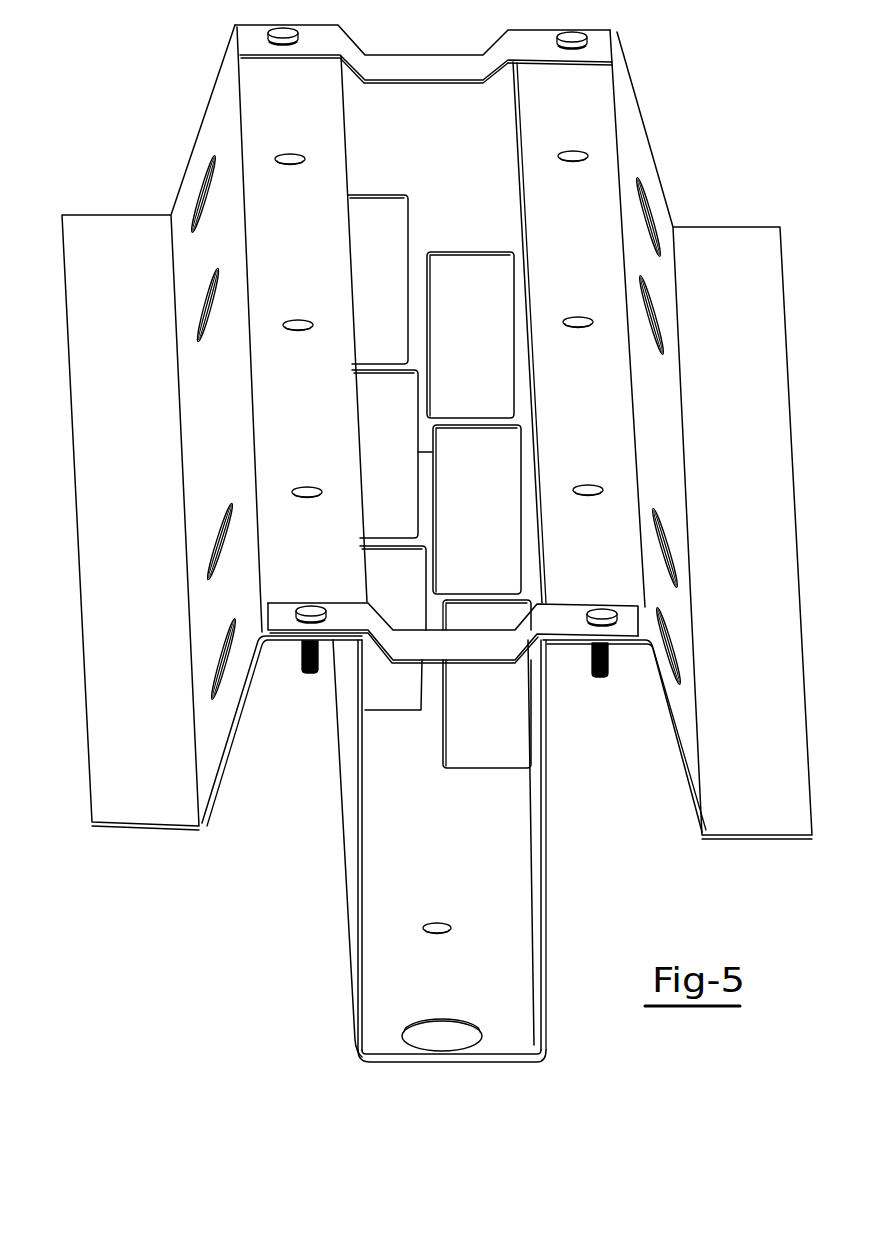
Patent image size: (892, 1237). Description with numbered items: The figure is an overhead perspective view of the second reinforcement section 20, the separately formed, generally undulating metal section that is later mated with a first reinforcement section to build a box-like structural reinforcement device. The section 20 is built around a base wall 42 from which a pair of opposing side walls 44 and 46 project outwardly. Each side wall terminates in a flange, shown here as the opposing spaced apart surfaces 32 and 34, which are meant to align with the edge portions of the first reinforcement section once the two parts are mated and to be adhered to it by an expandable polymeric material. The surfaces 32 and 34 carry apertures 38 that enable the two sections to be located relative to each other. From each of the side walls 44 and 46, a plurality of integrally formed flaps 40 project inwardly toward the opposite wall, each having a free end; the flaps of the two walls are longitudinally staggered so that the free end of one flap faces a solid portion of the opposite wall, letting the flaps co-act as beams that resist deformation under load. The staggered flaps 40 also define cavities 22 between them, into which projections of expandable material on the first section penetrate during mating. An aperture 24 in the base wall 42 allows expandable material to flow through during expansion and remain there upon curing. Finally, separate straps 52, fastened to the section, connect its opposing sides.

The second reinforcement section 20 is at (163, 156).
The cavity 22 is at (495, 210).
The aperture 24 is at (441, 1031).
The opposing spaced apart surface 32 is at (590, 88).
The opposing spaced apart surface 34 is at (268, 86).
The aperture 38 is at (289, 162).
The flap 40 is at (448, 265).
The base wall 42 is at (495, 1046).
The side wall 44 is at (532, 880).
The side wall 46 is at (348, 760).
The strap 52 is at (454, 70).